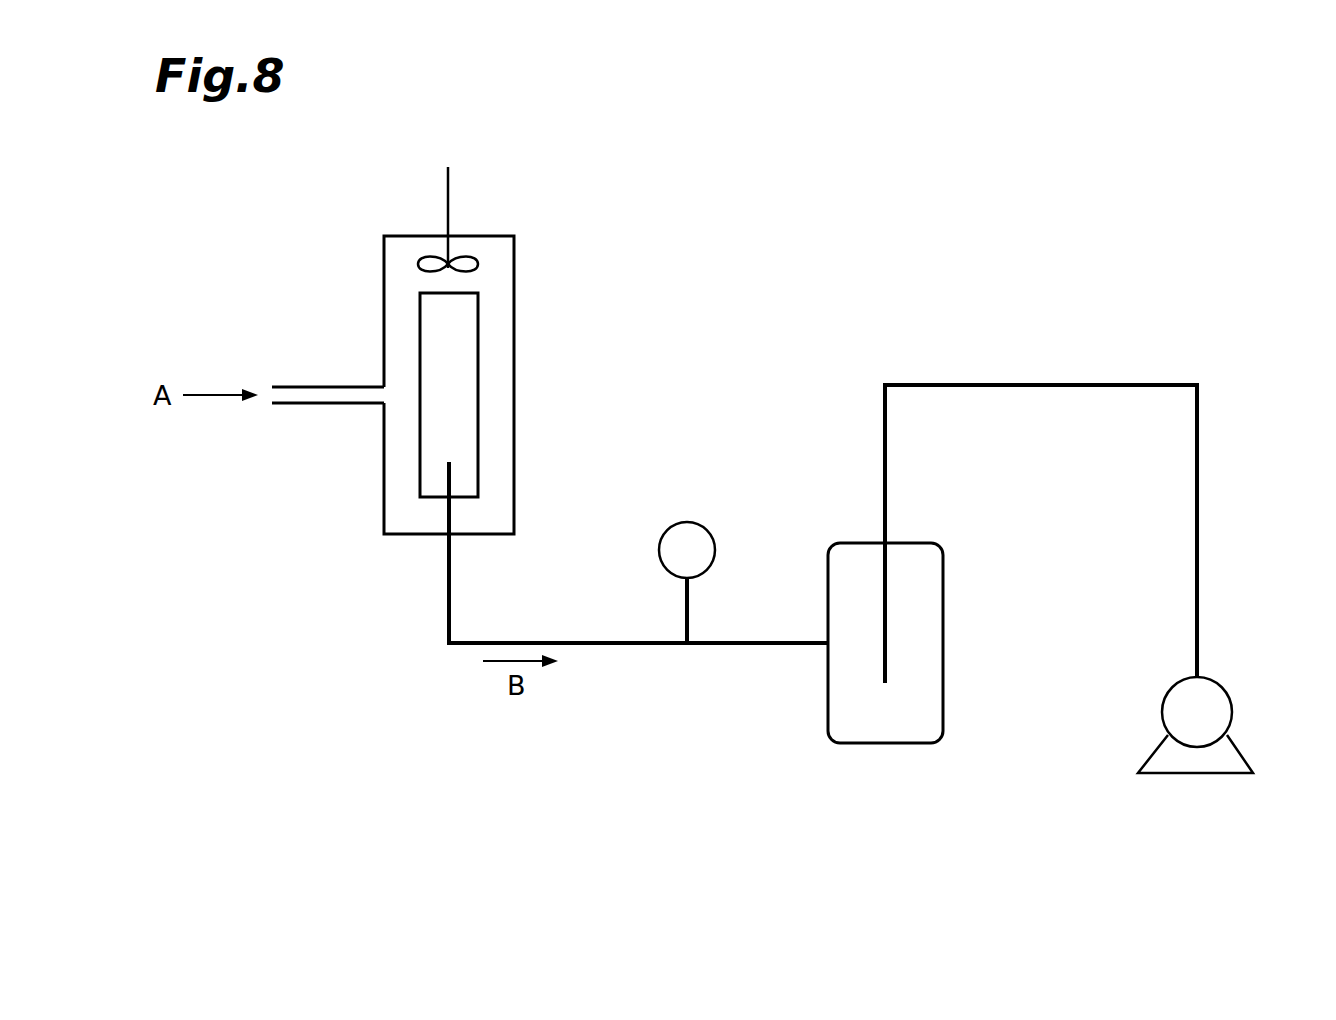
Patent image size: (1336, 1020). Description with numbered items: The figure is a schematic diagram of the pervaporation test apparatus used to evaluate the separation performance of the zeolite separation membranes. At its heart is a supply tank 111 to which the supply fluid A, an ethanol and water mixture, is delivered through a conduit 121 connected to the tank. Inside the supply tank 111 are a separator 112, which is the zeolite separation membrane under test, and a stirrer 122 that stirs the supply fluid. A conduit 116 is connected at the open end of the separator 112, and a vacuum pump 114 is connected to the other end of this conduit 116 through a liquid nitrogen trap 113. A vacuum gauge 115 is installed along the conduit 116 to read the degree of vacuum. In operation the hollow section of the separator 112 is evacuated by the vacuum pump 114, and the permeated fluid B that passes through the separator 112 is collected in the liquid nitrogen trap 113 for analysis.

The supply tank 111 is at (515, 273).
The separator 112 is at (478, 318).
The liquid nitrogen trap 113 is at (945, 598).
The vacuum pump 114 is at (1229, 695).
The vacuum gauge 115 is at (692, 522).
The conduit 116 is at (447, 588).
The conduit 121 is at (317, 405).
The stirrer 122 is at (466, 258).